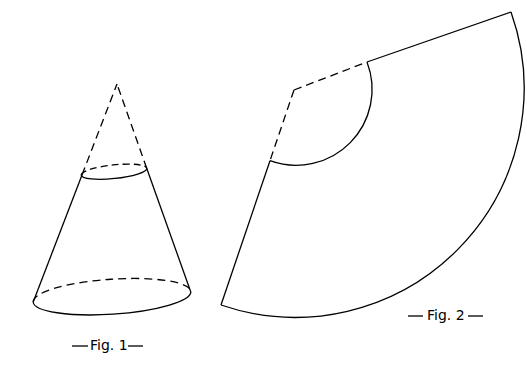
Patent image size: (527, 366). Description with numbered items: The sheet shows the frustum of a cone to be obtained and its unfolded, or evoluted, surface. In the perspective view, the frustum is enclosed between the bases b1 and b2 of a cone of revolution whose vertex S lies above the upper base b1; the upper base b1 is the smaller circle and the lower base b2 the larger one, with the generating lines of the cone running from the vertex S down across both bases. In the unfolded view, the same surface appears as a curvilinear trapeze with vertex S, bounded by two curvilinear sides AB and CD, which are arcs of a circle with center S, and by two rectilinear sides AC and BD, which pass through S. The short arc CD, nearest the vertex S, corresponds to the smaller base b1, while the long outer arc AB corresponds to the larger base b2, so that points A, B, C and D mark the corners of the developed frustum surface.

In FIG. 1, the vertex S is at (114, 124).
In FIG. 2, the vertex S is at (318, 111).
In FIG. 1, the base b1 is at (103, 171).
In FIG. 1, the base b2 is at (103, 303).
In FIG. 2, the vertex of curvilinear trapeze A is at (245, 233).
In FIG. 2, the vertex of curvilinear trapeze B is at (372, 164).
In FIG. 2, the vertex of curvilinear trapeze C is at (315, 116).
In FIG. 2, the vertex of curvilinear trapeze D is at (437, 37).